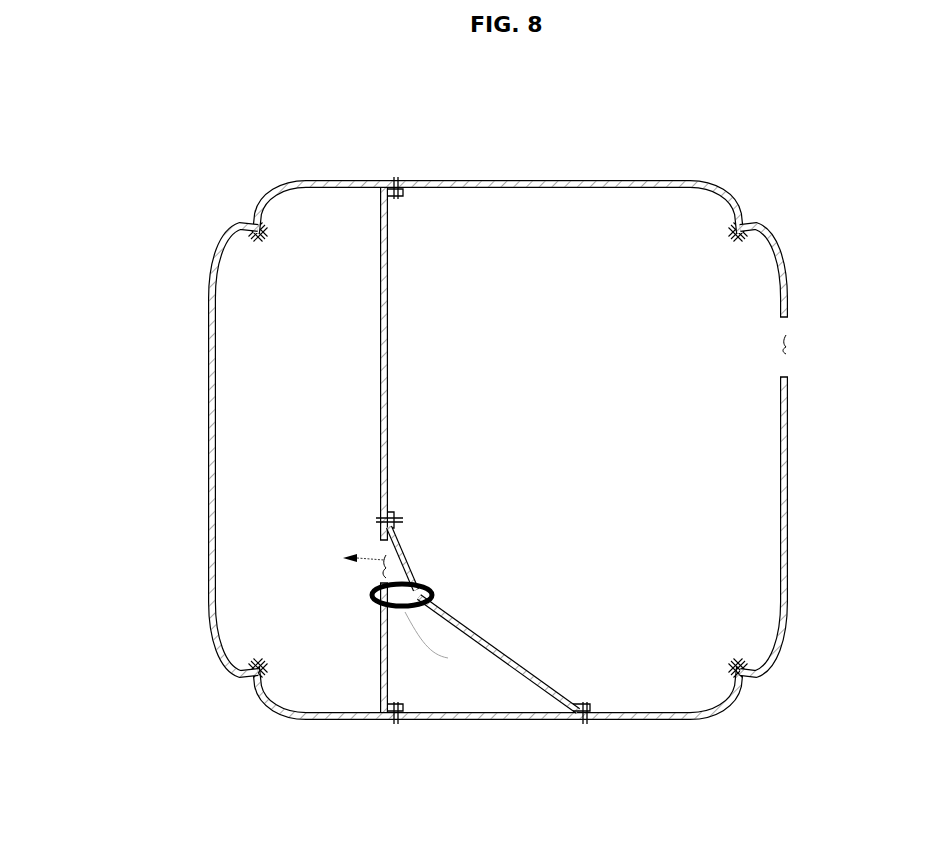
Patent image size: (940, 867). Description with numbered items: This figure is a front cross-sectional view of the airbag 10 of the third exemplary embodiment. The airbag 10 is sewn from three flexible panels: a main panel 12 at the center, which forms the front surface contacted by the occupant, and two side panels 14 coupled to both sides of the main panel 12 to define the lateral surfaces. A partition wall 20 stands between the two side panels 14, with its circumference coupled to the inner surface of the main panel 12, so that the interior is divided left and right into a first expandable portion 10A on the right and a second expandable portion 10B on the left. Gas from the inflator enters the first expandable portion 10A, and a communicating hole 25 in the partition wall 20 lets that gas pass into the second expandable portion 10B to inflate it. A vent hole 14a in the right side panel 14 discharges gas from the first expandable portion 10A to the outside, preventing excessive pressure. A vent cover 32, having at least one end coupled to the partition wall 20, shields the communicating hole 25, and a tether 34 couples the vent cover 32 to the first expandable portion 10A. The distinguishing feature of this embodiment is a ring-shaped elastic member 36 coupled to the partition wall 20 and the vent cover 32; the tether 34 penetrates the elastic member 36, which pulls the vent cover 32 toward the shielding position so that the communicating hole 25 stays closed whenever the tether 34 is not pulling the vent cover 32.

The airbag 10 is at (711, 165).
The first expandable portion 10A is at (752, 547).
The second expandable portion 10B is at (252, 414).
The main panel 12 is at (463, 182).
The side panel 14 is at (209, 338).
The vent hole 14a is at (786, 342).
The partition wall 20 is at (379, 240).
The communicating hole 25 is at (386, 560).
The vent cover 32 is at (405, 560).
The tether 34 is at (520, 669).
The elastic member 36 is at (403, 618).